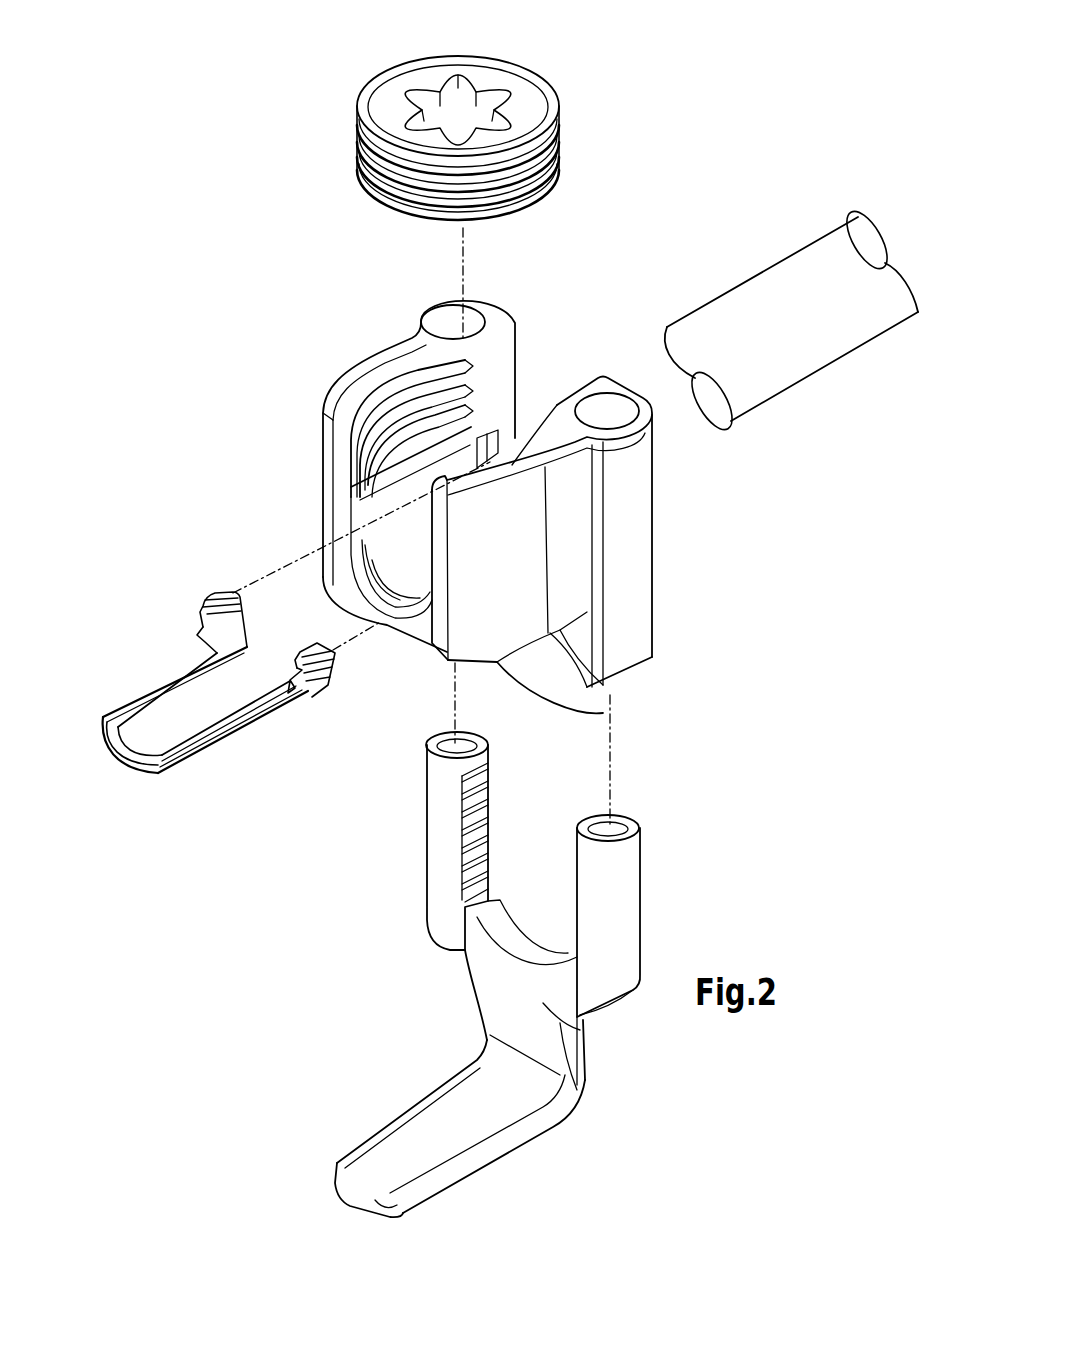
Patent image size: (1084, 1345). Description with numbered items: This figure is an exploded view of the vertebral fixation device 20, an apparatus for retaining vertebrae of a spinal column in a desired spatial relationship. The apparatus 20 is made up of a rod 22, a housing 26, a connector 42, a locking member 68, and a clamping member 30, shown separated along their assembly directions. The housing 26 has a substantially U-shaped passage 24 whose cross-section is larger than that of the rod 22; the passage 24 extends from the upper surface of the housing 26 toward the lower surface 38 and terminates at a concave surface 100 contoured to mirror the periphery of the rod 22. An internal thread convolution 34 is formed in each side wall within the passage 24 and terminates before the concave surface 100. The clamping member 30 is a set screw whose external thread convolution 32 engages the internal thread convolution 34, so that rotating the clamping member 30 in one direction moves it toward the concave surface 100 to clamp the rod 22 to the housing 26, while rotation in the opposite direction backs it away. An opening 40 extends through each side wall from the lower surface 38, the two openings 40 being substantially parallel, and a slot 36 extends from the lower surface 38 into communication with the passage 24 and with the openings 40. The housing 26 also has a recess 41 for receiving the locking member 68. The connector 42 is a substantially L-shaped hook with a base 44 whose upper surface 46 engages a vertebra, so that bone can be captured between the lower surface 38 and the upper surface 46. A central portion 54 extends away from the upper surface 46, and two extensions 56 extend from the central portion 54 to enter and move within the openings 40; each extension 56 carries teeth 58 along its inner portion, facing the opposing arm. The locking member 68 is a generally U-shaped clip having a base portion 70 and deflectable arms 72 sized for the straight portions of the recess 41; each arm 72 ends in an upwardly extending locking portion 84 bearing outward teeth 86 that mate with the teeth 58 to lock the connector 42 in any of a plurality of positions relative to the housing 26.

The vertebral fixation device 20 is at (295, 112).
The rod 22 is at (768, 303).
The passage 24 is at (542, 349).
The housing 26 is at (658, 540).
The clamping member 30 is at (540, 71).
The external thread convolution 32 is at (560, 167).
The internal thread convolution 34 is at (363, 442).
The slot 36 is at (492, 448).
The lower surface 38 is at (604, 712).
The opening 40 is at (440, 324).
The recess 41 is at (378, 569).
The connector 42 is at (498, 1174).
The base 44 is at (490, 1110).
The upper surface 46 is at (422, 1142).
The central portion 54 is at (542, 1004).
The extensions 56 is at (440, 822).
The teeth 58 is at (490, 813).
The locking member 68 is at (179, 783).
The base portion 70 is at (118, 762).
The deflectable arms 72 is at (165, 677).
The locking portion 84 is at (207, 600).
The teeth 86 is at (190, 632).
The concave surface 100 is at (417, 573).